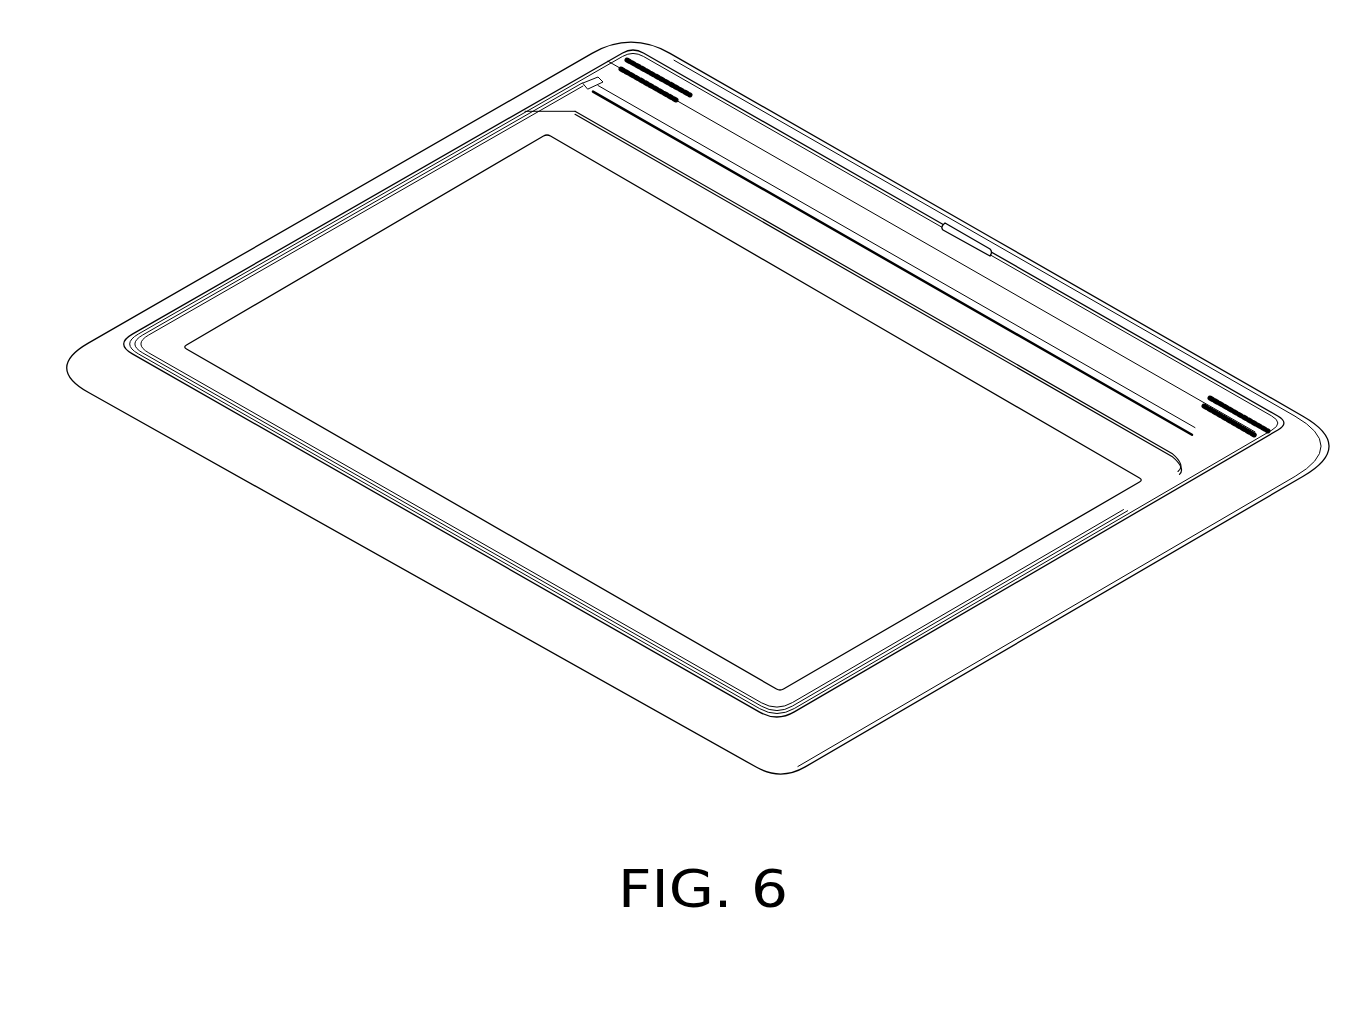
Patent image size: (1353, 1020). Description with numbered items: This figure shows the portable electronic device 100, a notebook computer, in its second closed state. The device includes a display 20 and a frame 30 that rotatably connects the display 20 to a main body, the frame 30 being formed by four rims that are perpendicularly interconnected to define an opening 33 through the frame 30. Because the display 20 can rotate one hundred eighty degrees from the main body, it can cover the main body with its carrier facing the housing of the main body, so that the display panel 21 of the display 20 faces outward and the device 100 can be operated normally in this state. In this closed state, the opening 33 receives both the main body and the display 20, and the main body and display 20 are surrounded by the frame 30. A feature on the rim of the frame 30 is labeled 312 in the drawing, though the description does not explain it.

The portable electronic device 100 is at (698, 408).
The display 20 is at (943, 607).
The display panel 21 is at (650, 553).
The frame 30 is at (1170, 530).
The opening 33 is at (398, 522).
The button 312 is at (970, 234).